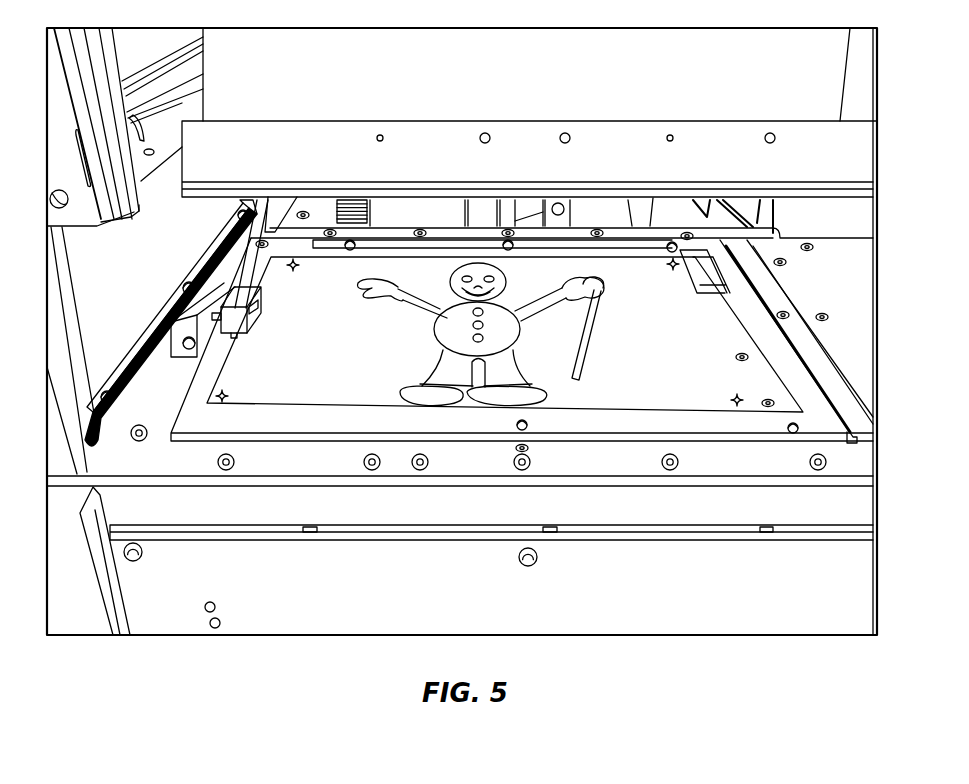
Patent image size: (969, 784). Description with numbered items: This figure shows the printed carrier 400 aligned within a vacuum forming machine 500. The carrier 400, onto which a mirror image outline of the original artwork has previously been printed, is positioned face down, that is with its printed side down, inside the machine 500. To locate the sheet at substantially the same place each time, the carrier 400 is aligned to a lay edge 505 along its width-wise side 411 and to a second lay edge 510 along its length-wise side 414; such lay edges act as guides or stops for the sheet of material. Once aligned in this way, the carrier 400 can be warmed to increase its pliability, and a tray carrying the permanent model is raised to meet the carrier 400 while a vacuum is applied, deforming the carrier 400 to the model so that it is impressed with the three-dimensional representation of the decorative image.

The carrier 400 is at (636, 393).
The width-wise side 411 is at (242, 350).
The length-wise side 414 is at (345, 262).
The vacuum forming machine 500 is at (306, 119).
The lay edge 505 is at (264, 305).
The second lay edge 510 is at (594, 253).